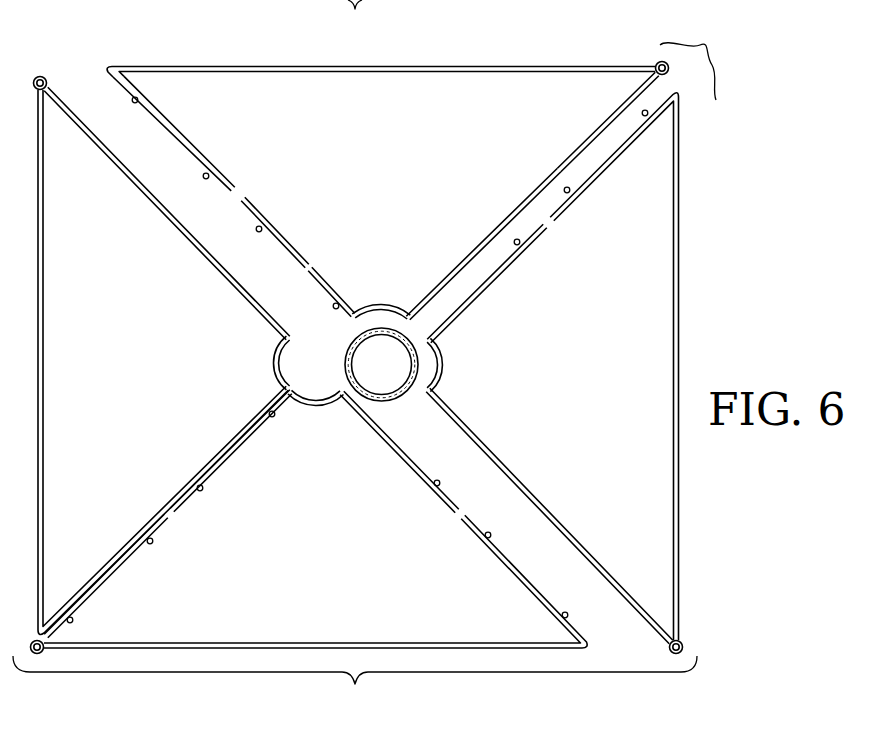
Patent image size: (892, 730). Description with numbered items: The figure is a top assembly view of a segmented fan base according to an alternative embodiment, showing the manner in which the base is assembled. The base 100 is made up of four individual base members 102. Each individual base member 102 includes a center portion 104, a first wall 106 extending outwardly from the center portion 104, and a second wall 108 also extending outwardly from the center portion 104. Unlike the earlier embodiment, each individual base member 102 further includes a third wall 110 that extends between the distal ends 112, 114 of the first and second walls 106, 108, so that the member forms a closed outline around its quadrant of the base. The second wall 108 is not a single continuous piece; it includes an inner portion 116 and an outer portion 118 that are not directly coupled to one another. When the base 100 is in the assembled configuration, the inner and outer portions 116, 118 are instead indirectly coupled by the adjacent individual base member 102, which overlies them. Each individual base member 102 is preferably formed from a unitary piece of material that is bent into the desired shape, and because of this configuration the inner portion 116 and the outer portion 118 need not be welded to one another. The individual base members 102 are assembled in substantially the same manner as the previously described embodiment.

The base 100 is at (716, 198).
The individual base member 102 is at (437, 67).
The center portion 104 is at (376, 308).
The first wall 106 is at (303, 256).
The second wall 108 is at (518, 205).
The third wall 110 is at (398, 72).
The distal end of first wall 112 is at (118, 86).
The distal end of second wall 114 is at (633, 92).
The inner portion 116 is at (247, 204).
The outer portion 118 is at (200, 153).